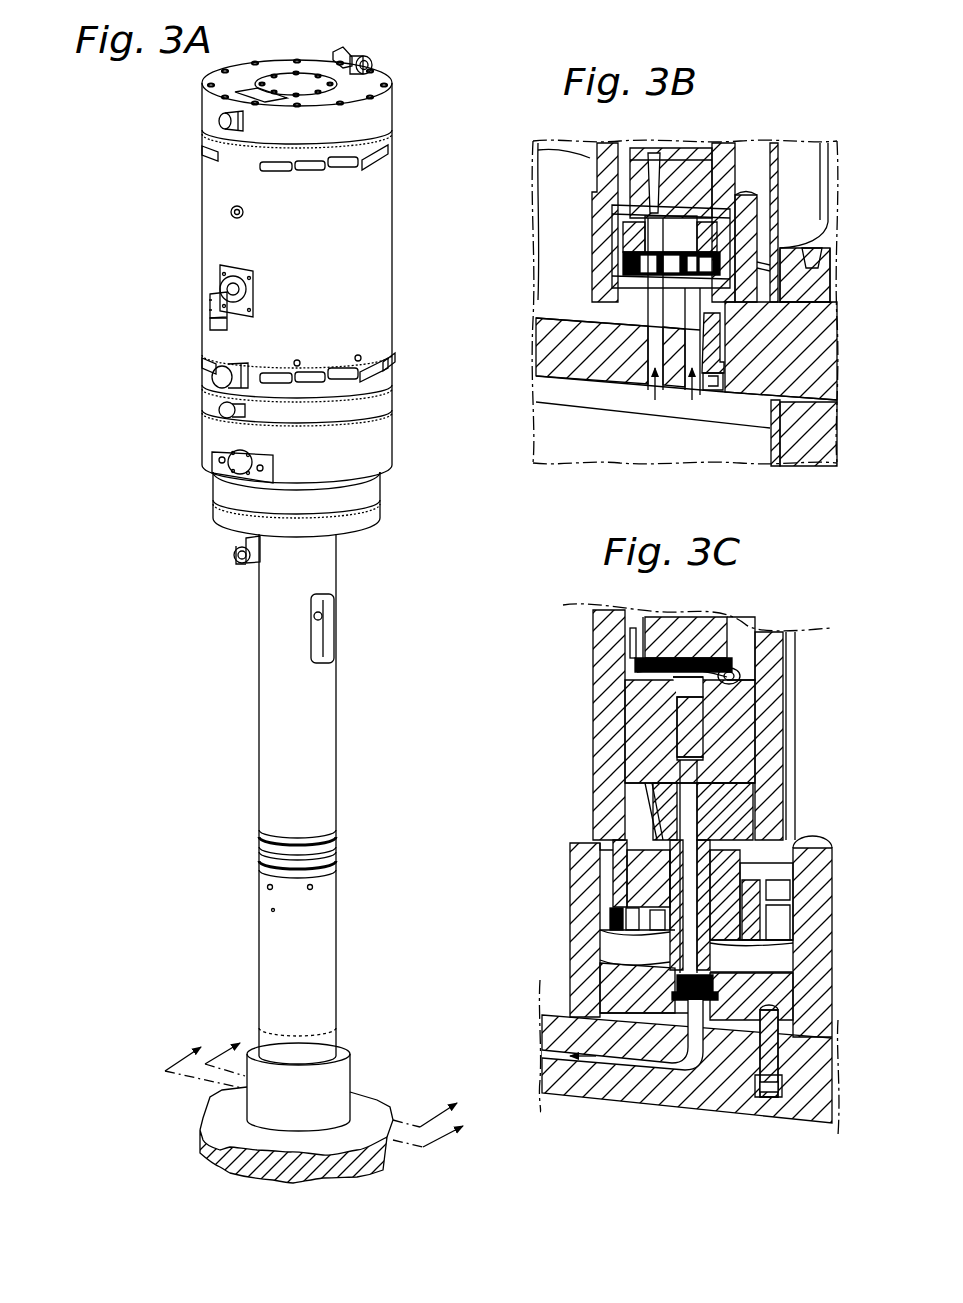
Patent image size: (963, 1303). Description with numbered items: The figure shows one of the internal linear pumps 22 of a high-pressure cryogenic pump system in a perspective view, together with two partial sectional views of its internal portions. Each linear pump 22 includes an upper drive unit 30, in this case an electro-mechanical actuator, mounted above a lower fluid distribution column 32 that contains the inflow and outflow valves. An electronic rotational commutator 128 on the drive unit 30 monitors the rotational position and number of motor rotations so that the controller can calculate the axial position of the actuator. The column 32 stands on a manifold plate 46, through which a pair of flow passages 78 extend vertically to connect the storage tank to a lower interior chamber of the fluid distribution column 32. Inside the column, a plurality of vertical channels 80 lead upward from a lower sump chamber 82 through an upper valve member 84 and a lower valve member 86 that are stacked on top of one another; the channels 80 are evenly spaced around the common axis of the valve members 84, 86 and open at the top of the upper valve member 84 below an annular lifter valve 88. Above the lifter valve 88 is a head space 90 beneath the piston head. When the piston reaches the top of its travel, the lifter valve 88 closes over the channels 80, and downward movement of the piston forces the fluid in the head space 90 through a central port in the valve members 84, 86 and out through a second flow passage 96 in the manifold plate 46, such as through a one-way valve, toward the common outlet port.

In FIG. 3A, the linear pump 22 is at (158, 498).
In FIG. 3A, the upper drive unit 30 is at (163, 78).
In FIG. 3A, the lower fluid distribution column 32 is at (163, 1143).
In FIG. 3A, the electronic rotational commutator 128 is at (242, 362).
In FIG. 3B, the manifold plate 46 is at (546, 352).
In FIG. 3C, the manifold plate 46 is at (565, 1025).
In FIG. 3B, the flow passages 78 is at (653, 351).
In FIG. 3C, the vertical channels 80 is at (650, 727).
In FIG. 3C, the lower sump chamber 82 is at (760, 963).
In FIG. 3C, the upper valve member 84 is at (742, 737).
In FIG. 3C, the lower valve member 86 is at (720, 830).
In FIG. 3C, the annular lifter valve 88 is at (637, 665).
In FIG. 3C, the head space 90 is at (740, 674).
In FIG. 3C, the second flow passage 96 is at (607, 1063).